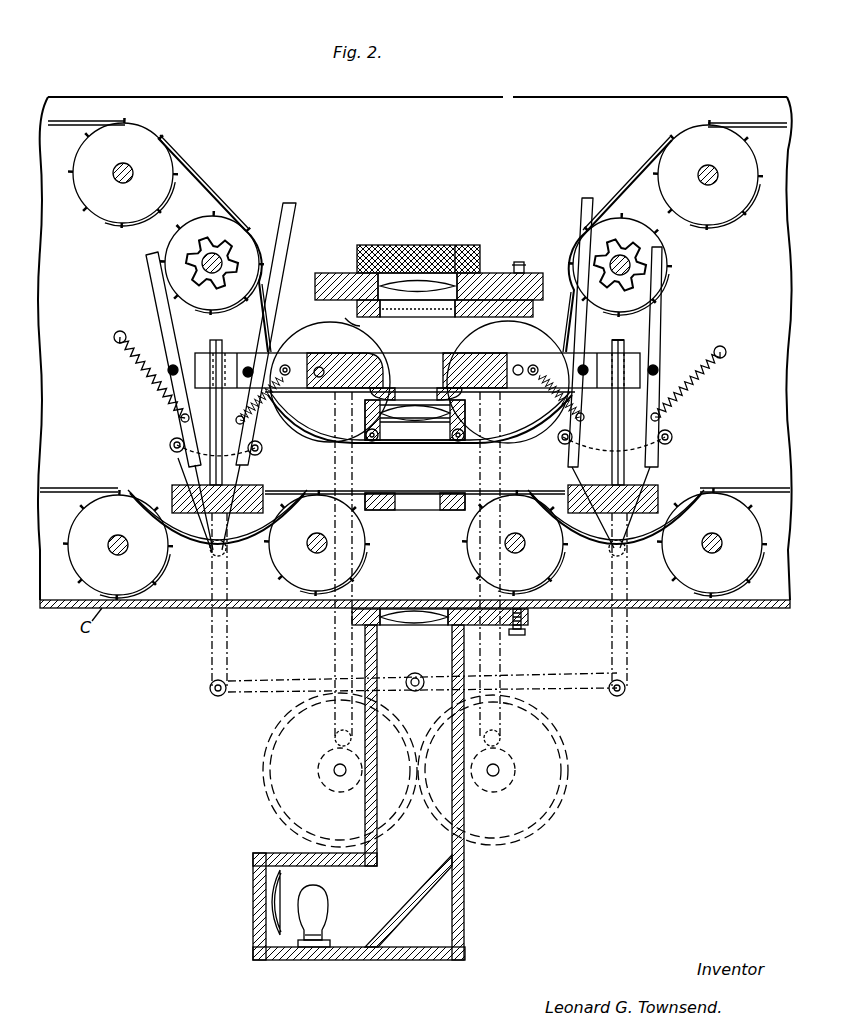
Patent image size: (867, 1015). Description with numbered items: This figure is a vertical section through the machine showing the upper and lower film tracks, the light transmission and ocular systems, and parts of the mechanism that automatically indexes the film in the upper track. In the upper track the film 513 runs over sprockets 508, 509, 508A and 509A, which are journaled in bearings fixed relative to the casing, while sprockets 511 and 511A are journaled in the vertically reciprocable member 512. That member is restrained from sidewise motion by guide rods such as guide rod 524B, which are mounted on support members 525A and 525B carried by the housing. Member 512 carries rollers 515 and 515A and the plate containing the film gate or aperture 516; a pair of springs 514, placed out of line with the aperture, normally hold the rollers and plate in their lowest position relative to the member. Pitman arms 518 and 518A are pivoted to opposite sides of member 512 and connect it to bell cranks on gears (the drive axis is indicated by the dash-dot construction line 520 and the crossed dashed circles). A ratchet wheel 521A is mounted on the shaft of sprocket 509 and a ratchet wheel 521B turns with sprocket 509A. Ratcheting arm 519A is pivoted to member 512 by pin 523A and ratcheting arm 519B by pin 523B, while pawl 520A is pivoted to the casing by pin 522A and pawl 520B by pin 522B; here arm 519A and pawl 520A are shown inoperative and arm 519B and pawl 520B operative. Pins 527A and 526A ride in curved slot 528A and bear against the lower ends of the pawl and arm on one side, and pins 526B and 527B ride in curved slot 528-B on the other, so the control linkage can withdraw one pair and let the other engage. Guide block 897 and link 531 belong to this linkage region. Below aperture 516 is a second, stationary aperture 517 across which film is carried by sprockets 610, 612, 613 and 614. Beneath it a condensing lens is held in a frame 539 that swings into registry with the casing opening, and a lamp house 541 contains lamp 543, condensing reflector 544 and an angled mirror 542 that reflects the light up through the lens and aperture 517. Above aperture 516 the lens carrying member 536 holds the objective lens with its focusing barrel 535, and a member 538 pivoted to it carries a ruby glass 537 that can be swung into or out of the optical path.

The sprocket 508 is at (123, 173).
The sprocket 508A is at (708, 175).
The sprocket 509 is at (212, 222).
The sprocket 509A is at (668, 257).
The film 513 is at (192, 168).
The ratchet wheel 521A is at (232, 245).
The ratchet wheel 521B is at (622, 252).
The ratcheting arm 519A is at (297, 213).
The ratcheting arm 519B is at (580, 210).
The pawl 520A is at (146, 258).
The pawl 520B is at (662, 305).
The pin 522A is at (168, 372).
The pin 522B is at (657, 368).
The pin 523A is at (226, 336).
The pin 523B is at (636, 328).
The guide rod 524B is at (628, 342).
The support member 525A is at (152, 400).
The support member 525B is at (690, 380).
The pin 526A is at (268, 418).
The pin 526B is at (662, 482).
The pin 527A is at (172, 454).
The pin 527B is at (673, 437).
The curved slot 528A is at (168, 444).
The curved slot 528-B is at (672, 430).
The guide block 897 is at (115, 490).
The ruby glass 537 is at (410, 268).
The focusing barrel 535 is at (468, 252).
The lens carrying member 536 is at (498, 275).
The plate 531 is at (345, 318).
The member 538 is at (447, 320).
The sprocket 511 is at (330, 382).
The sprocket 511A is at (508, 382).
The vertically reciprocable member 512 is at (462, 360).
The springs 514 is at (422, 386).
The roller 515 is at (366, 440).
The roller 515A is at (458, 441).
The film gate or aperture 516 is at (400, 425).
The second aperture 517 is at (426, 497).
The pitman arm 518 is at (318, 634).
The pitman arm 518A is at (490, 652).
The drive axis 520 is at (410, 625).
The frame 539 is at (526, 630).
The lamp house 541 is at (466, 911).
The mirror 542 is at (410, 930).
The lamp 543 is at (330, 897).
The condensing reflector 544 is at (283, 877).
The sprocket 614 is at (118, 545).
The sprocket 613 is at (317, 543).
The sprocket 612 is at (515, 543).
The sprocket 610 is at (712, 543).